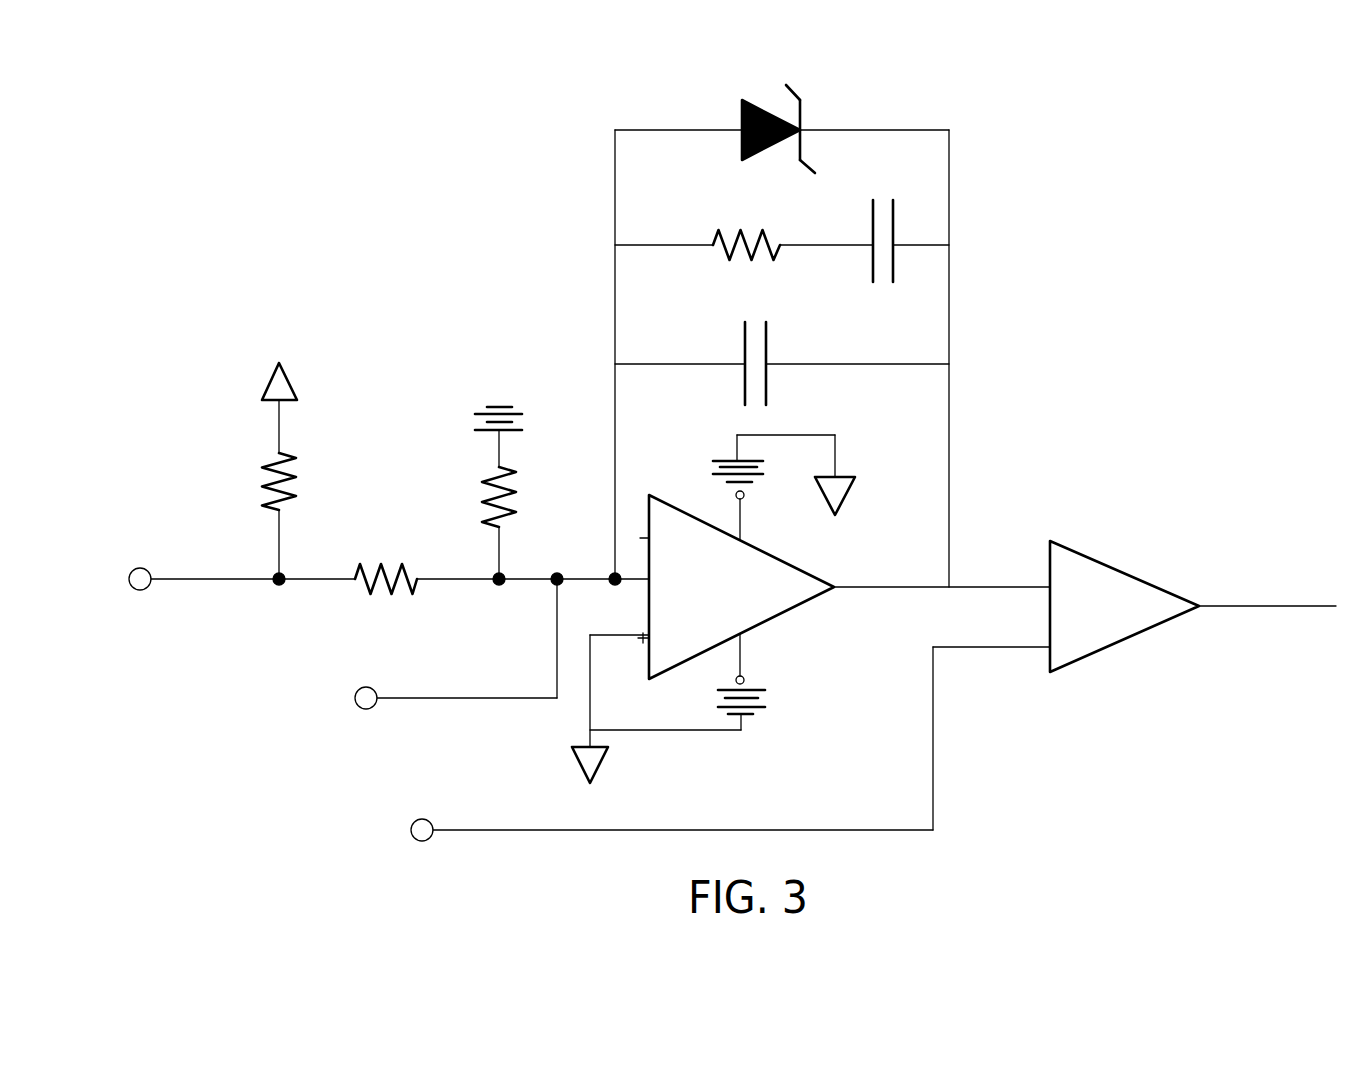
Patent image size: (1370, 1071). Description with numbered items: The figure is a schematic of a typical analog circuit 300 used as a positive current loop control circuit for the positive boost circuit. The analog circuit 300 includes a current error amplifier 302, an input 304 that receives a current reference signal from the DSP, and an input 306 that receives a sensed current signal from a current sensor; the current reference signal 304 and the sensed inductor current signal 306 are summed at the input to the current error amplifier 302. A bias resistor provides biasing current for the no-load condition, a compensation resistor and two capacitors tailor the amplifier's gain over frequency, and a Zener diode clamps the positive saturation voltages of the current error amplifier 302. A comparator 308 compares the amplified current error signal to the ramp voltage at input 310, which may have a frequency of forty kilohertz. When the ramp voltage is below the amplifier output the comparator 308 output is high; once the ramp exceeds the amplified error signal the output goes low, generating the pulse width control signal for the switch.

The analog circuit 300 is at (1012, 241).
The current error amplifier 302 is at (811, 609).
The input for current reference signal 304 is at (409, 655).
The input for sensed current signal 306 is at (147, 554).
The comparator 308 is at (1193, 606).
The input for ramp voltage 310 is at (720, 744).